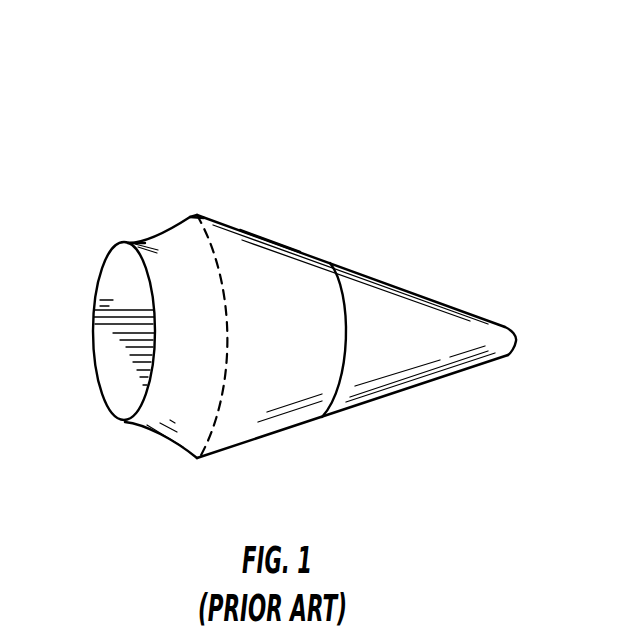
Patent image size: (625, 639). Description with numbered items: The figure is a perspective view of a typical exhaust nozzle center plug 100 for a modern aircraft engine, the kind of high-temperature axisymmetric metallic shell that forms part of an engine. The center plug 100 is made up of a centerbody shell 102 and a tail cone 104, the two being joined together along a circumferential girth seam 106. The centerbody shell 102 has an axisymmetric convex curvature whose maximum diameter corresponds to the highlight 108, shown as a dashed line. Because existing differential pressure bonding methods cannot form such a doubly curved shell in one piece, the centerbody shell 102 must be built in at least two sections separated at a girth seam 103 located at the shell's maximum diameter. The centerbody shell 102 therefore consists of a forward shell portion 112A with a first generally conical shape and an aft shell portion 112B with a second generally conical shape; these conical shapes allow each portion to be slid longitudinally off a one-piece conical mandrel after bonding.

The center plug 100 is at (483, 78).
The centerbody shell 102 is at (190, 442).
The girth seam 103 is at (218, 414).
The tail cone 104 is at (440, 376).
The circumferential girth seam 106 is at (348, 310).
The highlight 108 is at (201, 213).
The forward shell portion 112A is at (153, 238).
The aft shell portion 112B is at (290, 246).